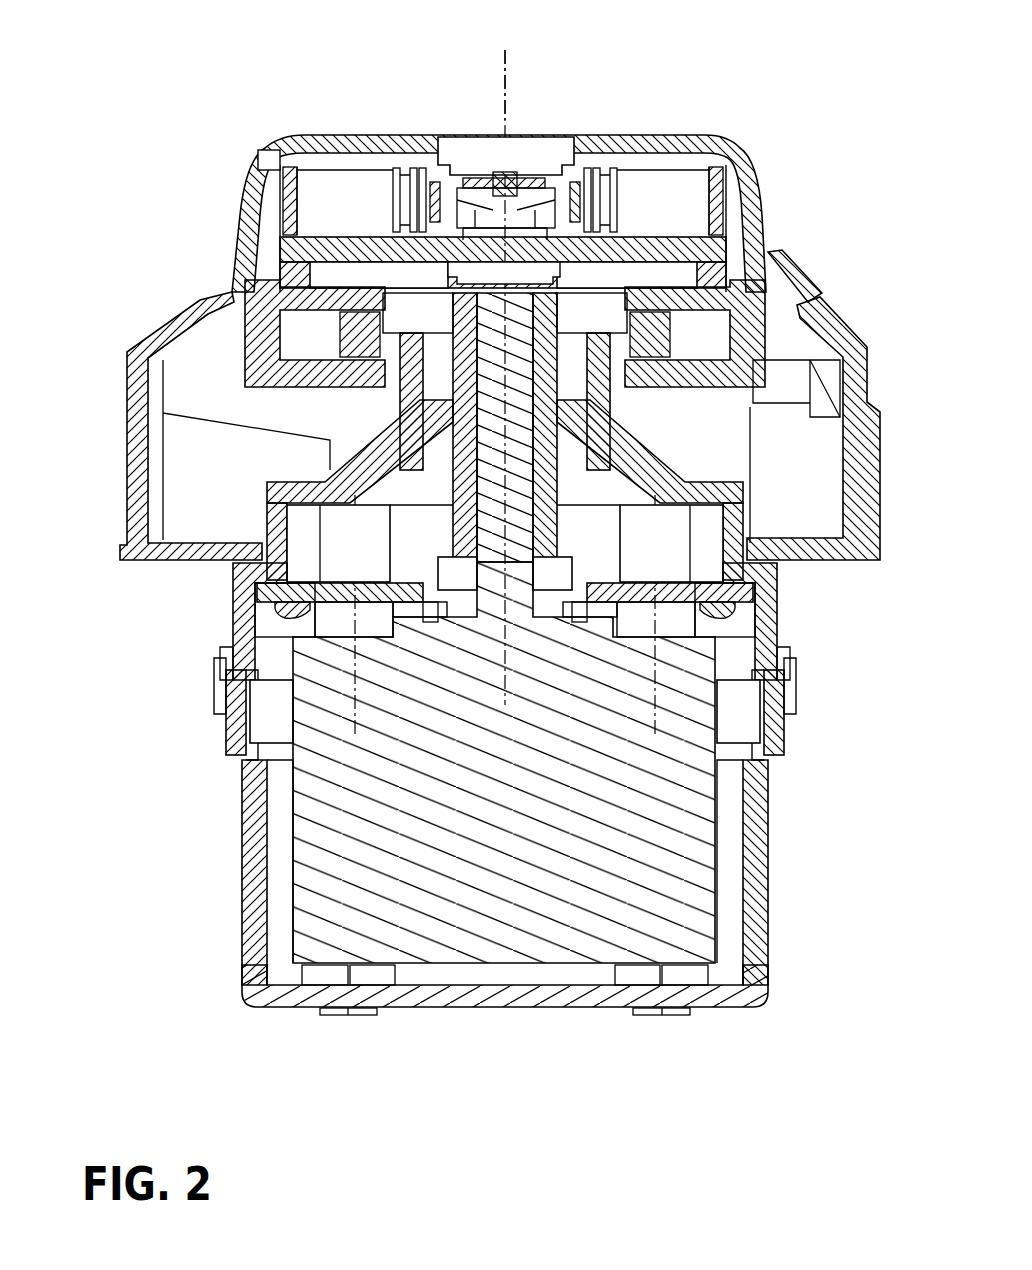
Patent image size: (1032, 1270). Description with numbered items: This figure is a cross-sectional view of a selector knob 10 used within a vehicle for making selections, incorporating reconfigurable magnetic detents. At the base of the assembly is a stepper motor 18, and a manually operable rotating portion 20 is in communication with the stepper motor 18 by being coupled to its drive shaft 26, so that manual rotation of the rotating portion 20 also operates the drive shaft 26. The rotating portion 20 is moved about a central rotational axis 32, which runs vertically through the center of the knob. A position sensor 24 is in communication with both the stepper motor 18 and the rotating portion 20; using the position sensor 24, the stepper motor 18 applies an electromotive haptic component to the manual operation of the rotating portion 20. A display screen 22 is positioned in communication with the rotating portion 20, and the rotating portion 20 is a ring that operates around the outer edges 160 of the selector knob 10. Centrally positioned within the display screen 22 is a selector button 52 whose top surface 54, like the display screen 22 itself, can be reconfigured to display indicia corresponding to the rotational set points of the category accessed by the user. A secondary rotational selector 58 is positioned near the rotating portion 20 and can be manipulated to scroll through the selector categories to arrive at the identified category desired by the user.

The selector knob 10 is at (810, 178).
The stepper motor 18 is at (358, 818).
The manually operable rotating portion 20 is at (238, 245).
The display screen 22 is at (362, 134).
The position sensor 24 is at (622, 192).
The drive shaft 26 is at (533, 523).
The central rotational axis 32 is at (503, 55).
The selector button 52 is at (548, 134).
The top surface 54 is at (470, 133).
The secondary rotational selector 58 is at (128, 440).
The outer edges 160 is at (268, 150).